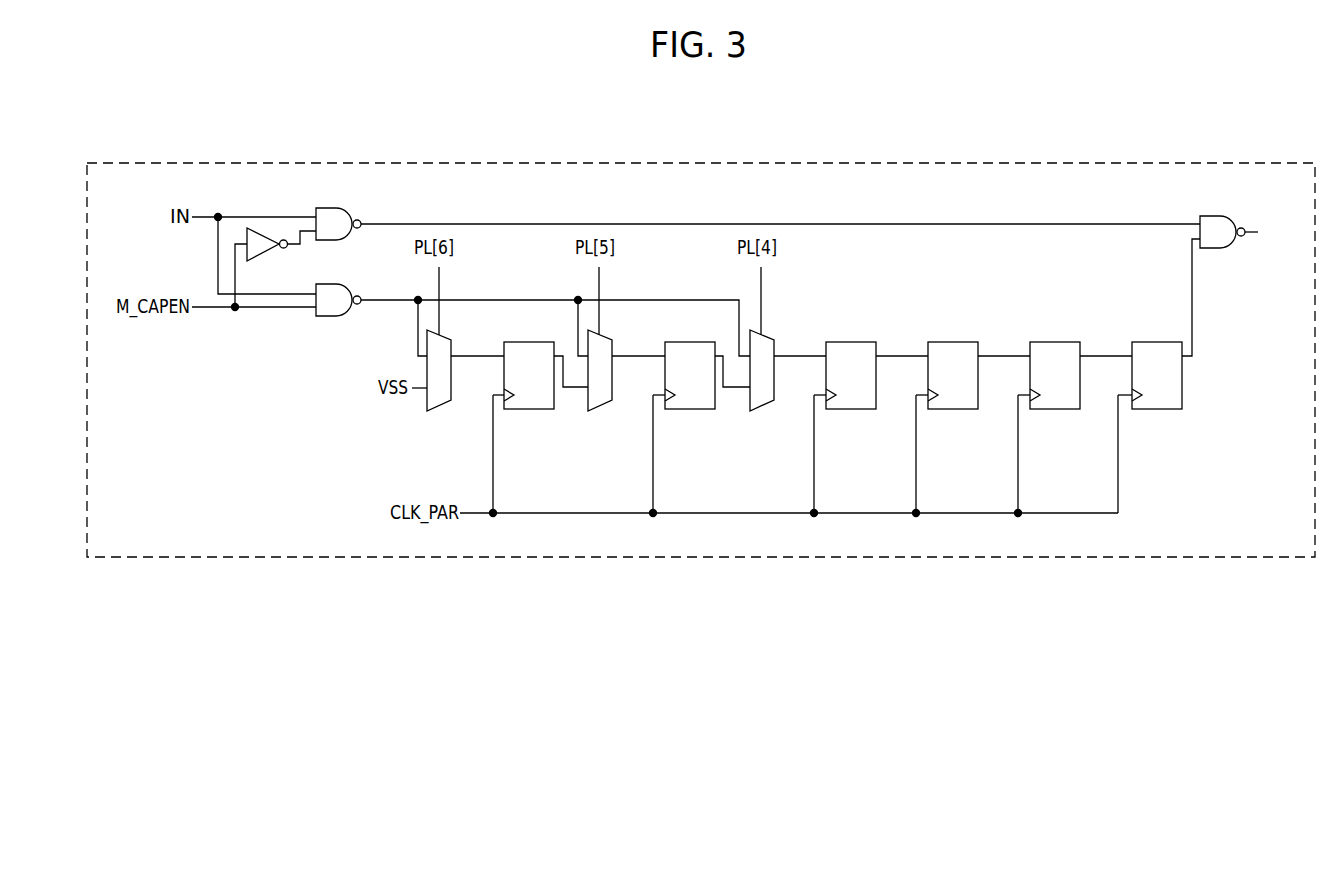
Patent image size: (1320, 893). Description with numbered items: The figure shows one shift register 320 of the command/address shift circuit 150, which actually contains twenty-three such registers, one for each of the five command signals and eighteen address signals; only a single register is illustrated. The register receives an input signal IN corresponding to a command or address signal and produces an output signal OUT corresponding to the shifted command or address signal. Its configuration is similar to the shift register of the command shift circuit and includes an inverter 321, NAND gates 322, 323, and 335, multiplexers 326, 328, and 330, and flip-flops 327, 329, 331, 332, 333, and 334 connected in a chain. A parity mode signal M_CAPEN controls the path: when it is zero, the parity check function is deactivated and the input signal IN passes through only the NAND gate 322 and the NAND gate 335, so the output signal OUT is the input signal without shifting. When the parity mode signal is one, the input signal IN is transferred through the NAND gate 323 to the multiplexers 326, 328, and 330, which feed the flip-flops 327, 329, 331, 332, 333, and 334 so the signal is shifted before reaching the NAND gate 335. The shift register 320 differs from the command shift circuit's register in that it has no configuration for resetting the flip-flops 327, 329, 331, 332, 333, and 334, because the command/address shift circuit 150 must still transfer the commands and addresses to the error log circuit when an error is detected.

The command/address shift circuit 150 is at (1028, 125).
The shift register 320 is at (1236, 163).
The inverter 321 is at (263, 255).
The NAND gate 322 is at (335, 207).
The NAND gate 323 is at (335, 283).
The multiplexer 326 is at (433, 408).
The flip-flop 327 is at (524, 409).
The multiplexer 328 is at (594, 408).
The flip-flop 329 is at (685, 409).
The multiplexer 330 is at (756, 408).
The flip-flop 331 is at (846, 409).
The flip-flop 332 is at (948, 409).
The flip-flop 333 is at (1050, 409).
The flip-flop 334 is at (1152, 409).
The NAND gate 335 is at (1218, 215).